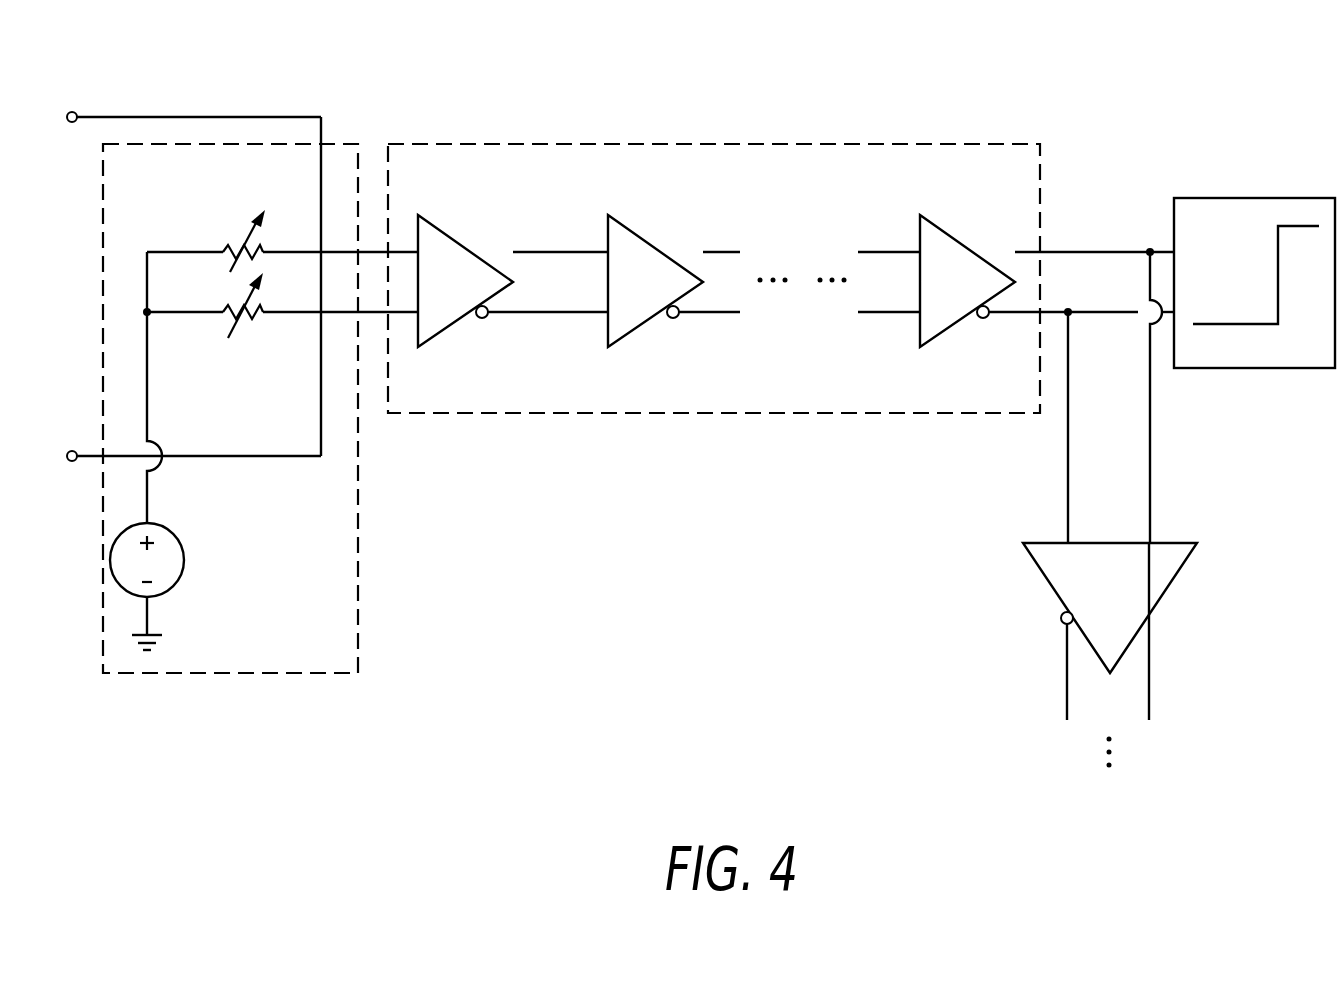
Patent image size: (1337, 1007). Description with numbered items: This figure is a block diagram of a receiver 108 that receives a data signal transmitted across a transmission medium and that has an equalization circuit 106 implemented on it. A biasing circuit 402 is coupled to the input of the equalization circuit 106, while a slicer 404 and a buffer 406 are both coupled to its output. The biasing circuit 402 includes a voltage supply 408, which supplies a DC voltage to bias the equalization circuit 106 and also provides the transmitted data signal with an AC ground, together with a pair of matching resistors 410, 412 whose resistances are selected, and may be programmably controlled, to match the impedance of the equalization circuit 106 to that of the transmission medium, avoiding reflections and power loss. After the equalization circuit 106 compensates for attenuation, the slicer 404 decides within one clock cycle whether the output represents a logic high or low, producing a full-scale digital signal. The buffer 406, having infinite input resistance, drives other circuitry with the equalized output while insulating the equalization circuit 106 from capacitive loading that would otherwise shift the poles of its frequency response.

The receiver 108 is at (767, 27).
The equalization circuit 106 is at (768, 413).
The biasing circuit 402 is at (260, 447).
The slicer 404 is at (1243, 198).
The buffer 406 is at (1155, 610).
The voltage supply 408 is at (185, 560).
The matching resistor 410 is at (305, 247).
The matching resistor 412 is at (293, 314).